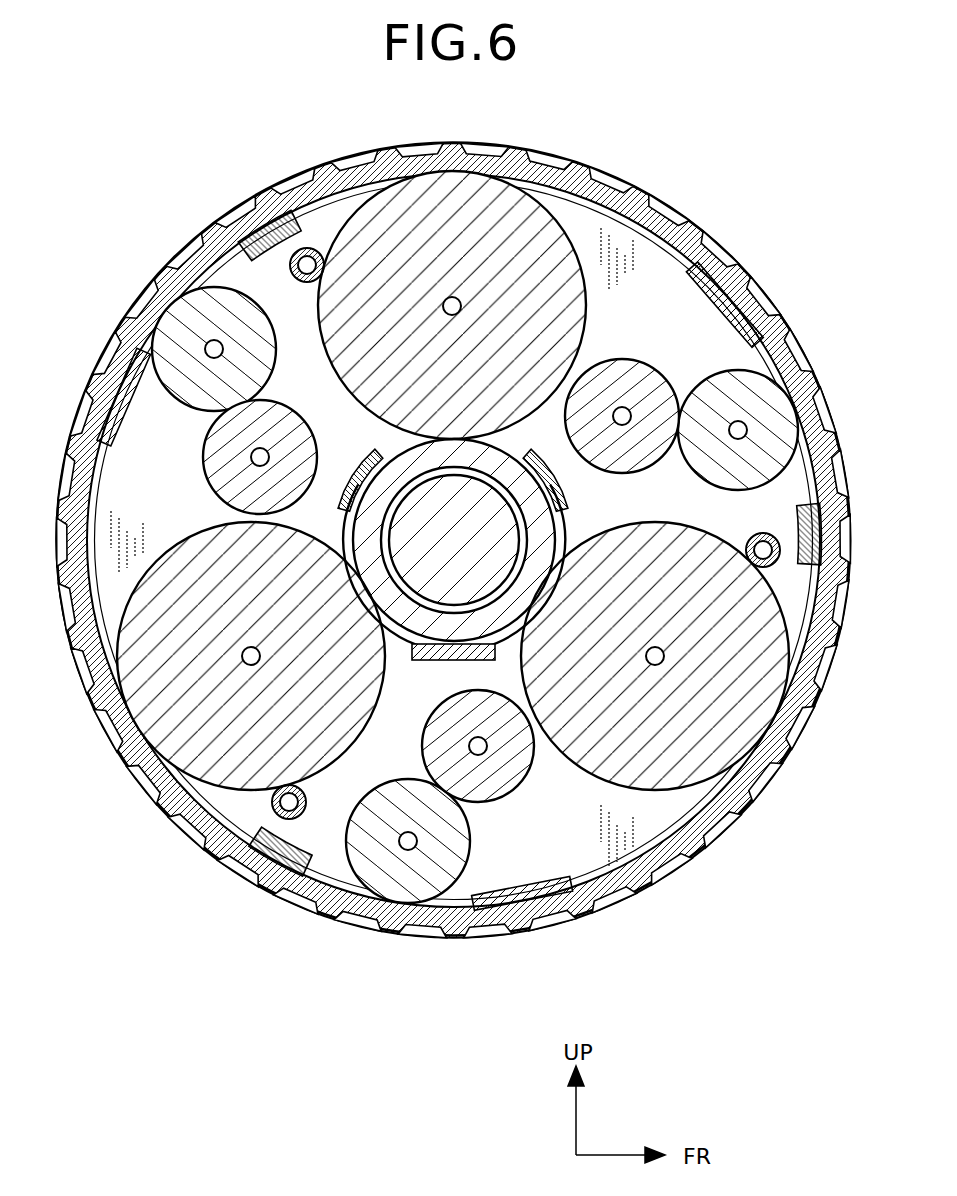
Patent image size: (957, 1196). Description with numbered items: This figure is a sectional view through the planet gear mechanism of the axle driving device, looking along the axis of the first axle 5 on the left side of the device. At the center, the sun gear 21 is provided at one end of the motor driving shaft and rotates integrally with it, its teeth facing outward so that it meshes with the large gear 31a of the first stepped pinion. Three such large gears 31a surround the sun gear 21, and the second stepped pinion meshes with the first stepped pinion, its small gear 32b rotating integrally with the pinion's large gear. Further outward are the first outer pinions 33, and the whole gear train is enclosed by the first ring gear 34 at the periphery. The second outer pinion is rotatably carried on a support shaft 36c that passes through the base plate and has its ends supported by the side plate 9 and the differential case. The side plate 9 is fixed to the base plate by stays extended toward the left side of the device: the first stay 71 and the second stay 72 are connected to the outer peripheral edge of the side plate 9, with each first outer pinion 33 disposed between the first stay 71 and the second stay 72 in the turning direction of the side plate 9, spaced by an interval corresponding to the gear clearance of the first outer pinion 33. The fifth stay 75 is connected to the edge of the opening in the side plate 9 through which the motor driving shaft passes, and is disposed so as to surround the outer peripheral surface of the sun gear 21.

The first axle 5 is at (438, 555).
The side plate 9 is at (623, 323).
The sun gear 21 is at (536, 511).
The large gear 31a is at (428, 255).
The small gear 32b is at (222, 456).
The first outer pinion 33 is at (188, 318).
The first ring gear 34 is at (613, 192).
The support shaft 36c is at (311, 248).
The first stay 71 is at (263, 226).
The second stay 72 is at (738, 292).
The fifth stay 75 is at (420, 662).